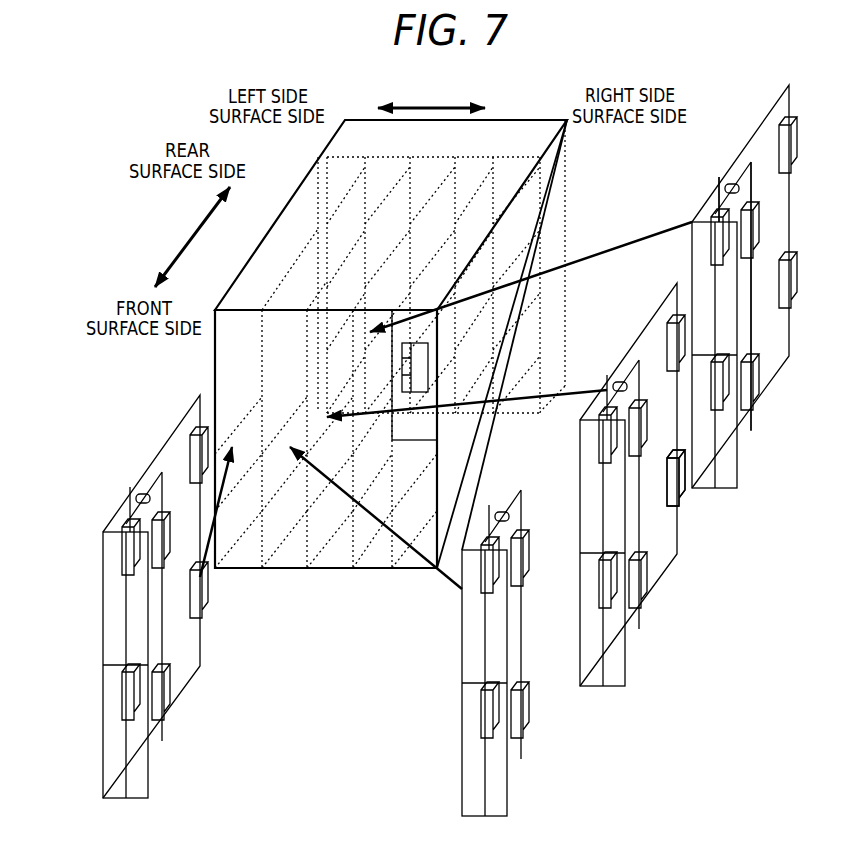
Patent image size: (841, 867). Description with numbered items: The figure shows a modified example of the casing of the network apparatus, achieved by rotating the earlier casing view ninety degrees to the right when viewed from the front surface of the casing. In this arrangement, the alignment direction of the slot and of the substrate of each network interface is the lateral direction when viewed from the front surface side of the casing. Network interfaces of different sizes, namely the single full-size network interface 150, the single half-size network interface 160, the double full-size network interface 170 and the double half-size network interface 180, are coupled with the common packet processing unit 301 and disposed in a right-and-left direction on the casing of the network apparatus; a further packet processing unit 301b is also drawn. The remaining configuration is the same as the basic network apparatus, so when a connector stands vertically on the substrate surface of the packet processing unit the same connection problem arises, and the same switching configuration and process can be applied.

The single full-size network interface 150 is at (702, 305).
The single half-size network interface 160 is at (707, 480).
The double full-size network interface 170 is at (580, 687).
The double half-size network interface 180 is at (110, 530).
The packet processing unit 301 is at (167, 470).
The connection board portion 301b is at (687, 563).